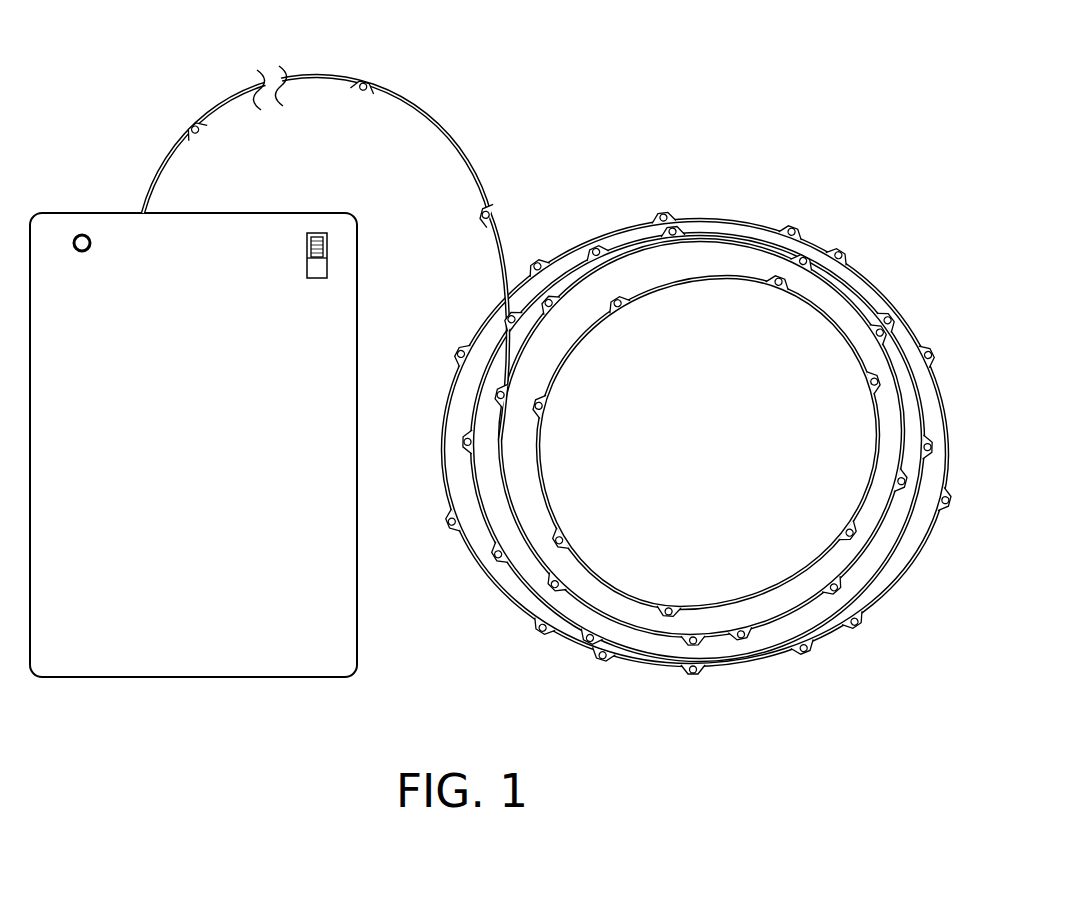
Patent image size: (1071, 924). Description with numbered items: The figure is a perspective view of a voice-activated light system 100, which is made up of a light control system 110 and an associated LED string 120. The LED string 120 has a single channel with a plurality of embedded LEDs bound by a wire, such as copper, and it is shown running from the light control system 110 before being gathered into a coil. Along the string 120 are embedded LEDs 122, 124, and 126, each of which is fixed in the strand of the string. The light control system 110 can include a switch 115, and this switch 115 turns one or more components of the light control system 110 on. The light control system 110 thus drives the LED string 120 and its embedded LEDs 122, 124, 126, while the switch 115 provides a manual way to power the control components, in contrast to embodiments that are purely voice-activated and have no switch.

The voice-activated light system 100 is at (491, 356).
The light control system 110 is at (210, 478).
The switch 115 is at (328, 243).
The LED string 120 is at (544, 361).
The embedded LED 122 is at (194, 127).
The embedded LED 124 is at (368, 87).
The embedded LED 126 is at (497, 213).